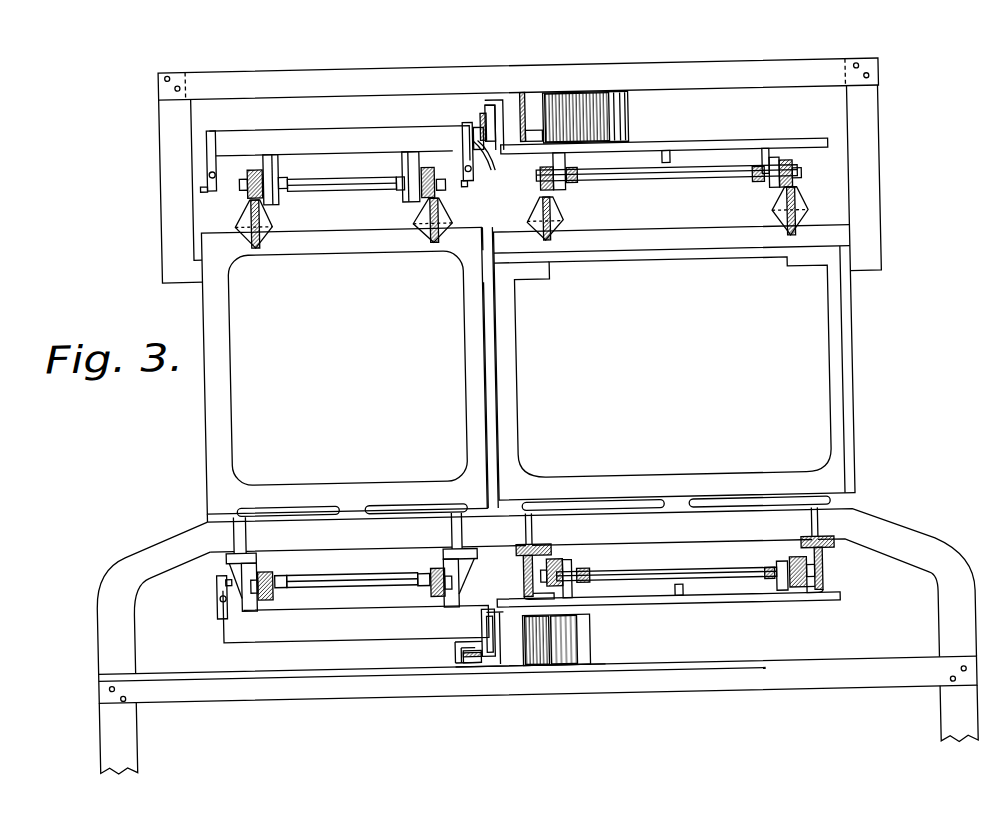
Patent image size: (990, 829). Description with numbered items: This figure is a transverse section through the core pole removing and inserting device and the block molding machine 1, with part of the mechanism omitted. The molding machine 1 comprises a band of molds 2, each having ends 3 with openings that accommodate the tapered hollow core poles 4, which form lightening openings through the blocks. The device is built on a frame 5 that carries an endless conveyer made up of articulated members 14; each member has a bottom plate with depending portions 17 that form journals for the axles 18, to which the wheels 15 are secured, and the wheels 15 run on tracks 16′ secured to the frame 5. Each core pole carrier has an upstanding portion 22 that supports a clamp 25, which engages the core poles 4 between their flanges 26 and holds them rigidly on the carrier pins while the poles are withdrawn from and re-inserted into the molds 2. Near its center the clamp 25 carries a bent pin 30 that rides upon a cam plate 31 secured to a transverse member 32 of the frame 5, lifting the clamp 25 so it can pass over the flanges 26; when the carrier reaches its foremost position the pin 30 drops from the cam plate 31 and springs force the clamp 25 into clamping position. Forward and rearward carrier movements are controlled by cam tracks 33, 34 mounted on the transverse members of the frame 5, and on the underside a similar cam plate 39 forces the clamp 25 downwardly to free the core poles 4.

The molding machine 1 is at (208, 121).
The molds 2 is at (325, 641).
The ends 3 is at (232, 137).
The core poles 4 is at (475, 124).
The frame 5 is at (838, 332).
The articulated members 14 is at (722, 148).
The wheels 15 is at (544, 189).
The track 16′ is at (558, 202).
The depending portions 17 is at (562, 189).
The axles 18 is at (715, 179).
The upstanding portion 22 is at (513, 120).
The clamp 25 is at (476, 127).
The flanges 26 is at (485, 158).
The bent pin 30 is at (491, 104).
The cam plate 31 is at (533, 119).
The transverse member 32 is at (639, 76).
The cam track 33 is at (621, 111).
The cam track 34 is at (536, 131).
The cam plate 39 is at (467, 652).